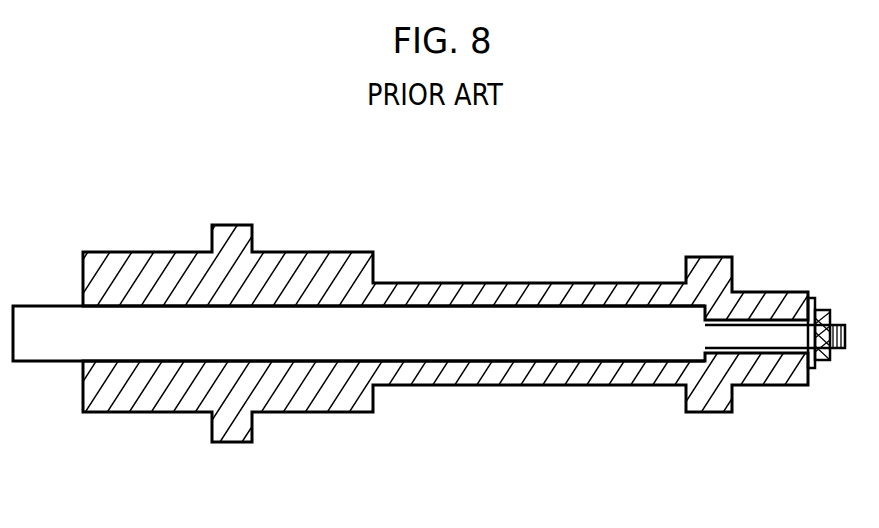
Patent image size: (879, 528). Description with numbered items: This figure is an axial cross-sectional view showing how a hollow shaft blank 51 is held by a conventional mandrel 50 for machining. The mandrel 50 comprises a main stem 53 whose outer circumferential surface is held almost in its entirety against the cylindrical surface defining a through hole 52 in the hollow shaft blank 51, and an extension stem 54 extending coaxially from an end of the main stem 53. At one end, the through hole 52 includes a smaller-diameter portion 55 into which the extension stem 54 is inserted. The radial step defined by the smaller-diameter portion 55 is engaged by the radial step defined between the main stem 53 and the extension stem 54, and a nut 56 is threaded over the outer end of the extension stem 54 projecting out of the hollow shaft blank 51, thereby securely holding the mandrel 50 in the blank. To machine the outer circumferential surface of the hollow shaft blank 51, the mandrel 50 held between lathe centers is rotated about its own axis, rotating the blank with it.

The mandrel 50 is at (433, 343).
The hollow shaft blank 51 is at (335, 253).
The through hole 52 is at (457, 302).
The main stem 53 is at (183, 333).
The extension stem 54 is at (770, 333).
The smaller-diameter portion 55 is at (728, 318).
The nut 56 is at (820, 305).